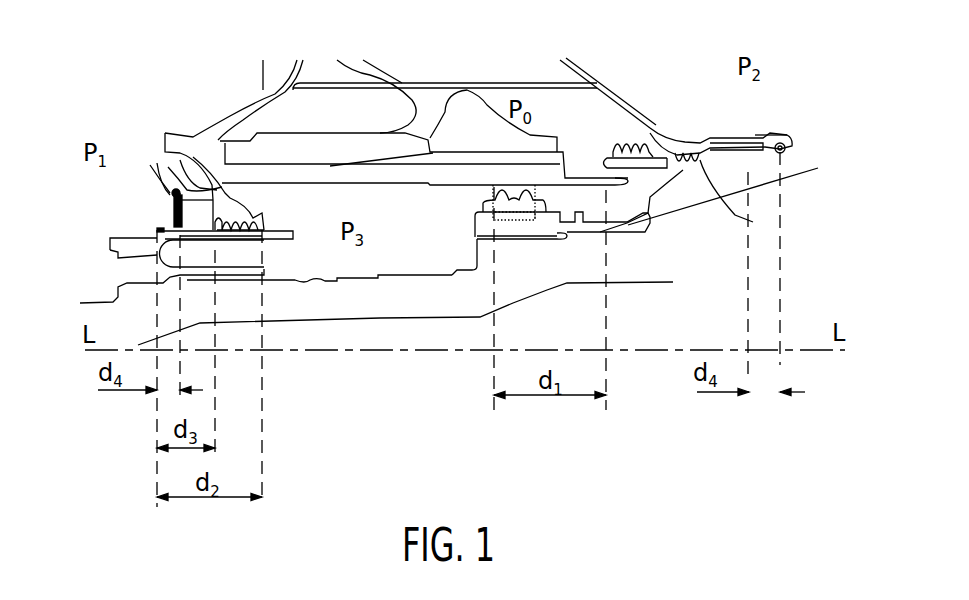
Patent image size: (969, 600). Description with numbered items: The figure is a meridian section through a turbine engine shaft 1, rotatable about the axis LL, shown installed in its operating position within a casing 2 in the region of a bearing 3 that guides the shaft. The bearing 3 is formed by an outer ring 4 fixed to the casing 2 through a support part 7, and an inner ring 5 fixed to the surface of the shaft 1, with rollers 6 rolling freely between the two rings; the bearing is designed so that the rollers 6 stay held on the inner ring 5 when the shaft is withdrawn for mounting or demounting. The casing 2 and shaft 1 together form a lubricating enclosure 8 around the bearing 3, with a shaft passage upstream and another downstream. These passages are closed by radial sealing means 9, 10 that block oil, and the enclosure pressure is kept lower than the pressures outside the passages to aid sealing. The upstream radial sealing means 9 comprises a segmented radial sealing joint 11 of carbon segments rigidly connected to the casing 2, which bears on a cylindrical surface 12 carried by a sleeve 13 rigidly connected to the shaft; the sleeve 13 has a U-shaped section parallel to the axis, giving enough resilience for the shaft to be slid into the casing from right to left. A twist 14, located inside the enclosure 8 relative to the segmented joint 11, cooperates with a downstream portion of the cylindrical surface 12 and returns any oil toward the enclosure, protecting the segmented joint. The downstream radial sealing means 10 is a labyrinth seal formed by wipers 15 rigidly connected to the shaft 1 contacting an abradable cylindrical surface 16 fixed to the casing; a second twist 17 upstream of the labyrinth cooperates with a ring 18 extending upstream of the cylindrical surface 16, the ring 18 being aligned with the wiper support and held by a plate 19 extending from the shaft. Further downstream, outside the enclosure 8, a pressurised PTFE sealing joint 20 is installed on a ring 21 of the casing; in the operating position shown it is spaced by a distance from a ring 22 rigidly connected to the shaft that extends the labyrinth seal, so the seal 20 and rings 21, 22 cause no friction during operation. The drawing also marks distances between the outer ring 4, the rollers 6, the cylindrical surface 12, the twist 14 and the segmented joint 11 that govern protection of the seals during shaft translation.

The turbine engine shaft 1 is at (676, 280).
The casing 2 is at (427, 100).
The bearing 3 is at (472, 215).
The outer ring 4 is at (572, 180).
The inner ring 5 is at (537, 215).
The rollers 6 is at (493, 192).
The support part 7 is at (543, 173).
The lubricating enclosure 8 is at (393, 202).
The radial sealing means 9 is at (147, 212).
The radial sealing means 10 is at (722, 127).
The segmented radial sealing joint 11 is at (168, 197).
The cylindrical surface 12 is at (173, 228).
The sleeve 13 is at (157, 253).
The twist 14 is at (230, 212).
The wipers 15 is at (673, 283).
The cylindrical surface 16 is at (689, 165).
The twist 17 is at (640, 135).
The ring 18 is at (640, 135).
The plate 19 is at (689, 165).
The pressurised sealing joint 20 is at (787, 148).
The ring 21 is at (755, 136).
The ring 22 is at (768, 157).